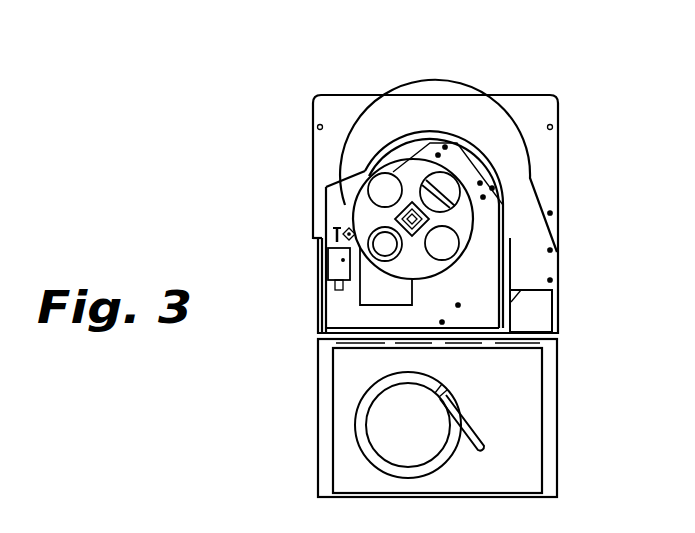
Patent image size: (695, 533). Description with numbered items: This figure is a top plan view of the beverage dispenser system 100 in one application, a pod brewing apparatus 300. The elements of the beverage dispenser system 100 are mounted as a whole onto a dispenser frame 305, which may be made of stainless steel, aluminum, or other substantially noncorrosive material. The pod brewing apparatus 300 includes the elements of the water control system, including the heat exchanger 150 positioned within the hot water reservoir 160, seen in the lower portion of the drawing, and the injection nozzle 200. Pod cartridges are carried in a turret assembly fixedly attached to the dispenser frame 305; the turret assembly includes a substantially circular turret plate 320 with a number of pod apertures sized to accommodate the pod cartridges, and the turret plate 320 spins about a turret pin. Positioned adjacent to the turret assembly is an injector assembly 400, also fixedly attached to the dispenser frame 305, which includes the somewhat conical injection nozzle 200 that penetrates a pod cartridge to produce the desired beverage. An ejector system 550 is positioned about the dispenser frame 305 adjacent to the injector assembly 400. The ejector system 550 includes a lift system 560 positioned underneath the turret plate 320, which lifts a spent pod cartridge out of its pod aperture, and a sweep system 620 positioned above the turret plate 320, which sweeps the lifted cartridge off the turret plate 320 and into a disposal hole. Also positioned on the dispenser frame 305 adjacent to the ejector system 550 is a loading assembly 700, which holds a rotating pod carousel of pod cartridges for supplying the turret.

The beverage dispenser system 100 is at (326, 60).
The pod brewing apparatus 300 is at (539, 90).
The turret plate 320 is at (413, 170).
The loading assembly 700 is at (367, 180).
The injector assembly 400 is at (460, 177).
The injection nozzle 200 is at (458, 198).
The lift system 560 is at (370, 250).
The sweep system 620 is at (334, 230).
The ejector system 550 is at (372, 252).
The dispenser frame 305 is at (556, 302).
The hot water reservoir 160 is at (553, 380).
The heat exchanger 150 is at (360, 448).